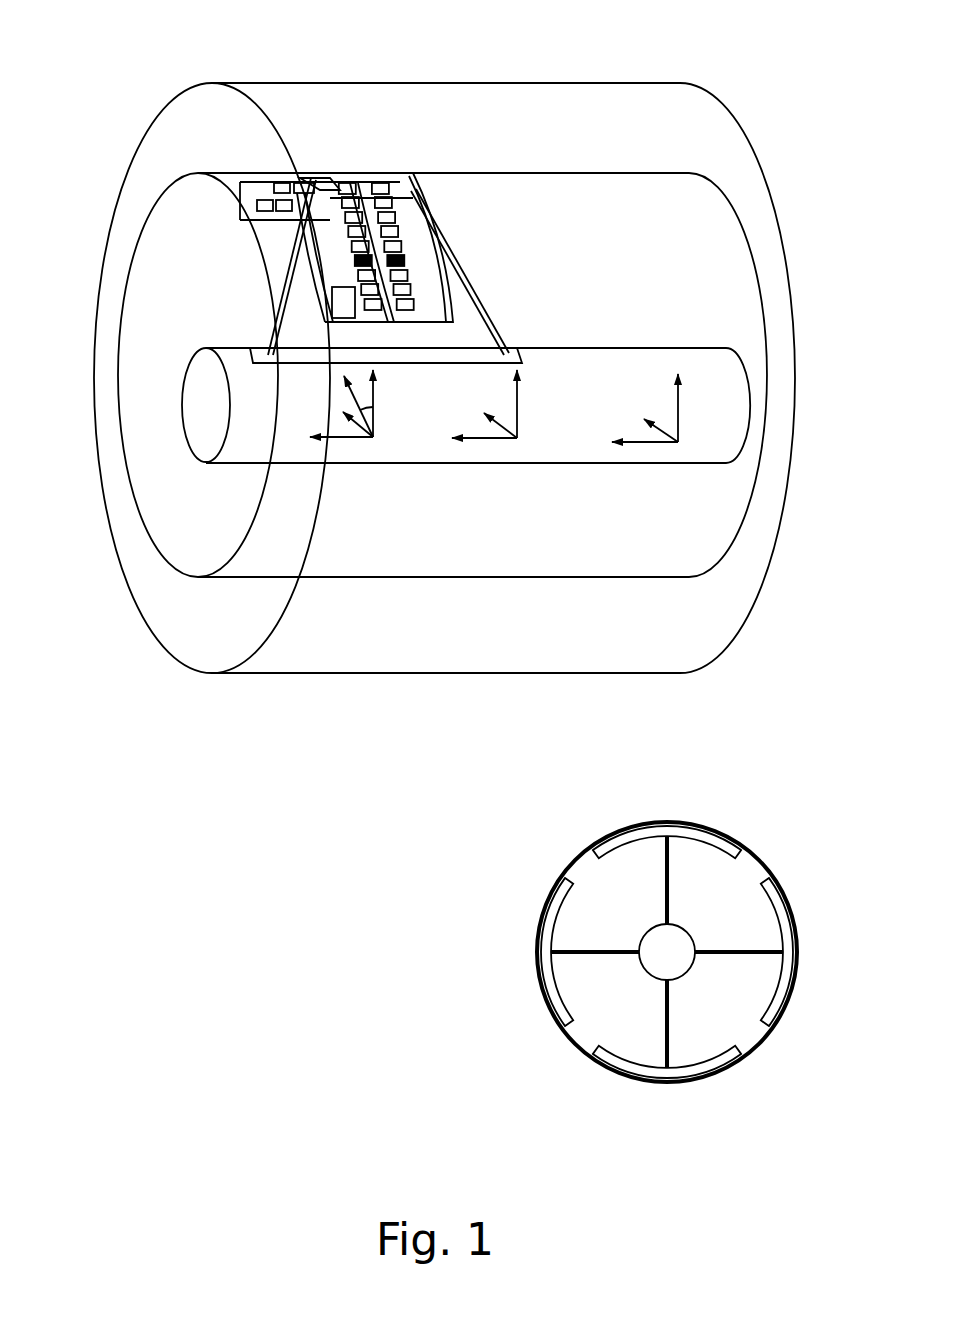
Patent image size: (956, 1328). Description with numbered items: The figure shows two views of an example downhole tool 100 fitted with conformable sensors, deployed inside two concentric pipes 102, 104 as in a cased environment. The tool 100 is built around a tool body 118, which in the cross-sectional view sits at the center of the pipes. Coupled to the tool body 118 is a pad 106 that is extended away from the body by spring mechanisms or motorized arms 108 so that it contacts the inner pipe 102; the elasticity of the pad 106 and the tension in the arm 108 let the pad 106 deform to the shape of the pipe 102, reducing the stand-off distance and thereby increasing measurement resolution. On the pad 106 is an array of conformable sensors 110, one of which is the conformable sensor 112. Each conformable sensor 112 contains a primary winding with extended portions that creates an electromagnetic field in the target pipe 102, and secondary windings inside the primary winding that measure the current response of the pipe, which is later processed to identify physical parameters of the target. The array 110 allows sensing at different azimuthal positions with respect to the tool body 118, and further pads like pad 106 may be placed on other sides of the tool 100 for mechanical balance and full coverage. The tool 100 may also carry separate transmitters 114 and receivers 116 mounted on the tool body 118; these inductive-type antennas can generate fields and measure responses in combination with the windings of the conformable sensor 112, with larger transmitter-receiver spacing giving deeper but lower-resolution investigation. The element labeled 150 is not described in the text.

The downhole tool 100 is at (433, 585).
The pipe 102 is at (125, 303).
The pipe 104 is at (780, 214).
The pad 106 is at (268, 193).
The spring mechanisms or motorized arms 108 is at (672, 1035).
The array of conformable sensors 110 is at (400, 186).
The conformable sensor 112 is at (382, 312).
The transmitter 114 is at (475, 452).
The receiver 116 is at (640, 453).
The tool body 118 is at (177, 420).
The connector / mounting tab 150 is at (314, 178).